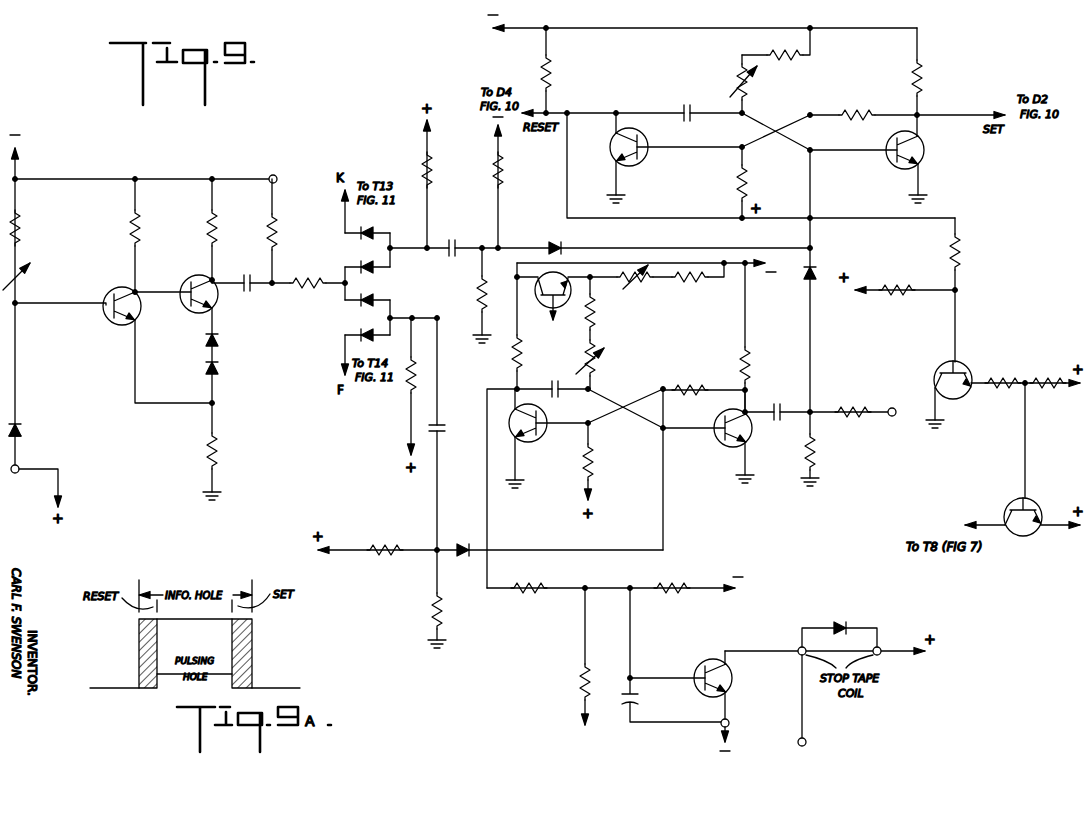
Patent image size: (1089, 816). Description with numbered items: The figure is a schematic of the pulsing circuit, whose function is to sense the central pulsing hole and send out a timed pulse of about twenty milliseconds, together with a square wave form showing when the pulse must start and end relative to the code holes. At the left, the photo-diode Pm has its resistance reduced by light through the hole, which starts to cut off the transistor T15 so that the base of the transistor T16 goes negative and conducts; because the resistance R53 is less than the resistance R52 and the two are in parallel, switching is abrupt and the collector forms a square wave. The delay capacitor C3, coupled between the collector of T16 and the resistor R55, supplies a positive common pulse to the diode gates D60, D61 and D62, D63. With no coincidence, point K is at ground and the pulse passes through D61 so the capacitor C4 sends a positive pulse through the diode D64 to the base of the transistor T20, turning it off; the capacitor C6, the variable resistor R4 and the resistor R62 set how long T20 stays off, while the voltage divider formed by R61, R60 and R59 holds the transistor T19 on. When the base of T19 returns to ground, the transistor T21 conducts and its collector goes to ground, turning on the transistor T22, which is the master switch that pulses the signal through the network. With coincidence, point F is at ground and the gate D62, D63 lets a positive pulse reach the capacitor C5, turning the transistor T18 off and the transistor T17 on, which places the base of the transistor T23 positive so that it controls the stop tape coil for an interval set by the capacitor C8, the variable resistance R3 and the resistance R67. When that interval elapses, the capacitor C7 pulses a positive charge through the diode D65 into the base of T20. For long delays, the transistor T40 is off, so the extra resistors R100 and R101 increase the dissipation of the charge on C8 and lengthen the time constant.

The resistance R52 is at (151, 235).
The resistance R53 is at (228, 229).
The resistor R55 is at (308, 274).
The delay capacitor C3 is at (242, 275).
The transistor T15 is at (135, 306).
The transistor T16 is at (211, 298).
The photo-diode Pm is at (27, 432).
The diode gate D60 is at (367, 225).
The diode gate D61 is at (367, 259).
The diode gate D62 is at (373, 292).
The diode gate D63 is at (367, 326).
The diode D64 is at (556, 240).
The diode D65 is at (825, 330).
The capacitor C4 is at (451, 241).
The capacitor C5 is at (446, 434).
The transistor T40 is at (545, 296).
The extra resistor R100 is at (631, 282).
The extra resistor R101 is at (693, 287).
The resistance R67 is at (605, 308).
The variable resistance R3 is at (599, 364).
The capacitor C8 is at (552, 382).
The transistor T17 is at (536, 434).
The transistor T18 is at (748, 432).
The capacitor C7 is at (777, 405).
The transistor T19 is at (639, 154).
The transistor T20 is at (919, 163).
The capacitor C6 is at (686, 105).
The variable resistor R4 is at (752, 84).
The resistor R62 is at (776, 44).
The voltage divider resistor R61 is at (934, 82).
The voltage divider resistor R60 is at (907, 106).
The voltage divider resistor R59 is at (758, 182).
The transistor T21 is at (961, 390).
The master switch transistor T22 is at (1034, 525).
The transistor T23 is at (707, 680).